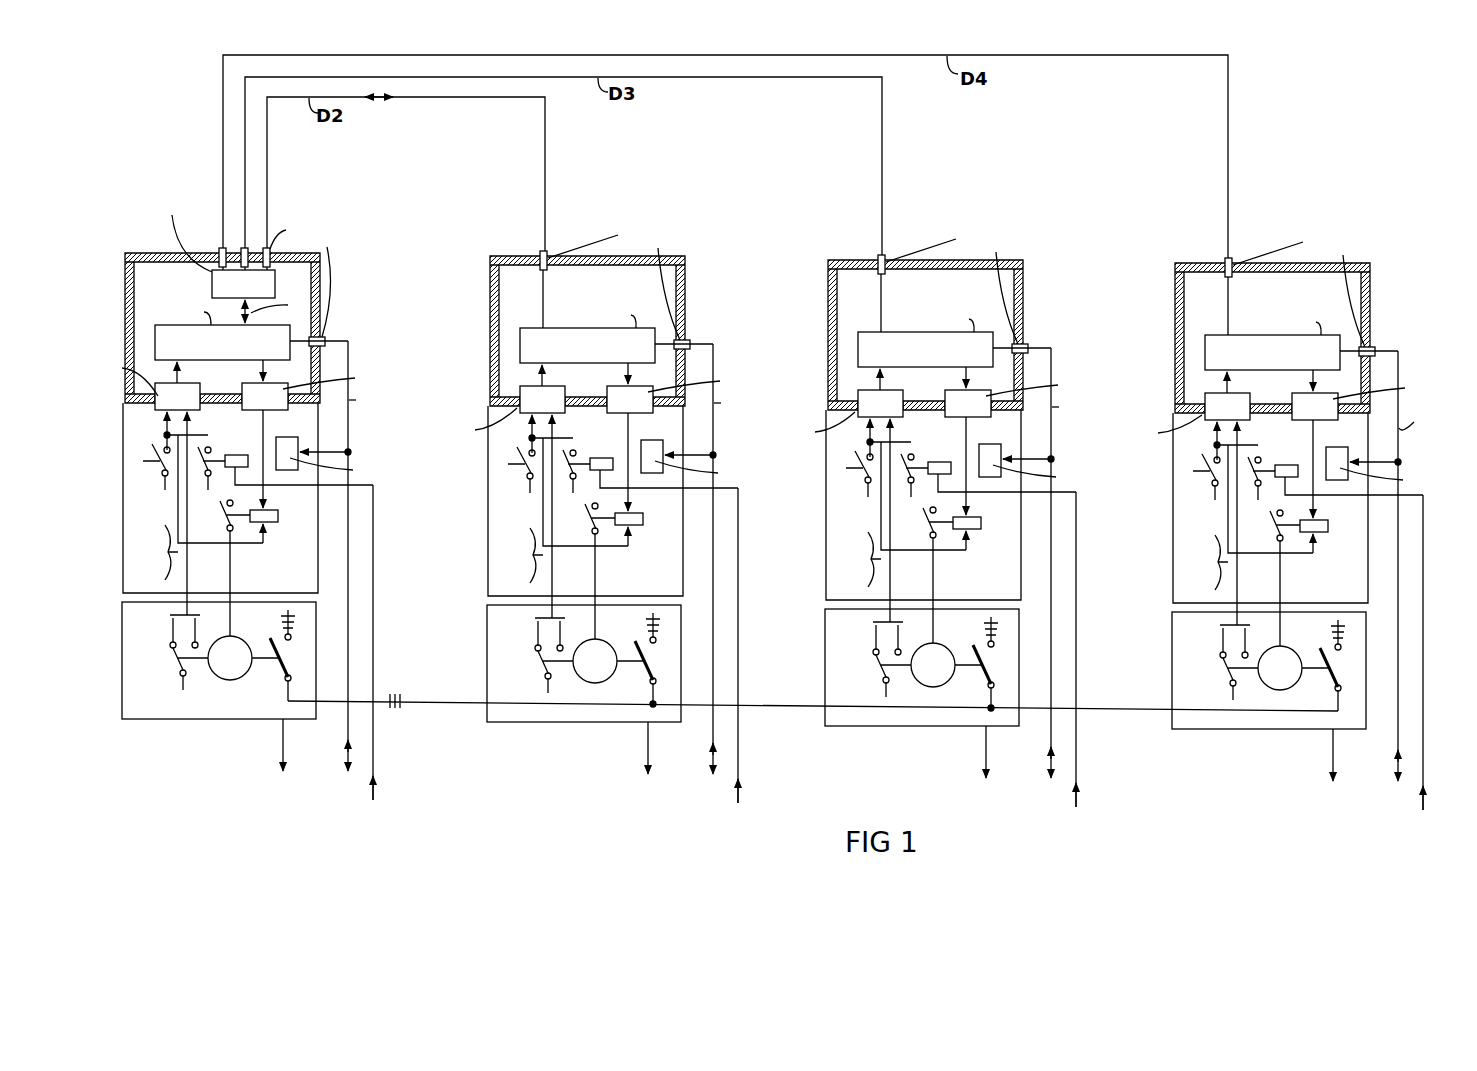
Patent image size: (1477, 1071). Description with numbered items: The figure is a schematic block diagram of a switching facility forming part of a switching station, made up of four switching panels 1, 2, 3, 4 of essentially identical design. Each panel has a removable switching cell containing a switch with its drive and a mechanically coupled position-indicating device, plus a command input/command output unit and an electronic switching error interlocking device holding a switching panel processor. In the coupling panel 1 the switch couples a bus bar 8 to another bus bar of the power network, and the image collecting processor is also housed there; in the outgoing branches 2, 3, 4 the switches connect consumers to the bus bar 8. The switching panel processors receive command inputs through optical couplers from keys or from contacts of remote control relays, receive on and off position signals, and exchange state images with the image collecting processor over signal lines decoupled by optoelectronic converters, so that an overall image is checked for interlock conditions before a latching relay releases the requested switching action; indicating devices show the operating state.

The switching panel 1 is at (167, 720).
The switching panel 2 is at (599, 518).
The switching panel 3 is at (941, 522).
The switching panel 4 is at (1286, 525).
The bus bar 8 is at (810, 712).